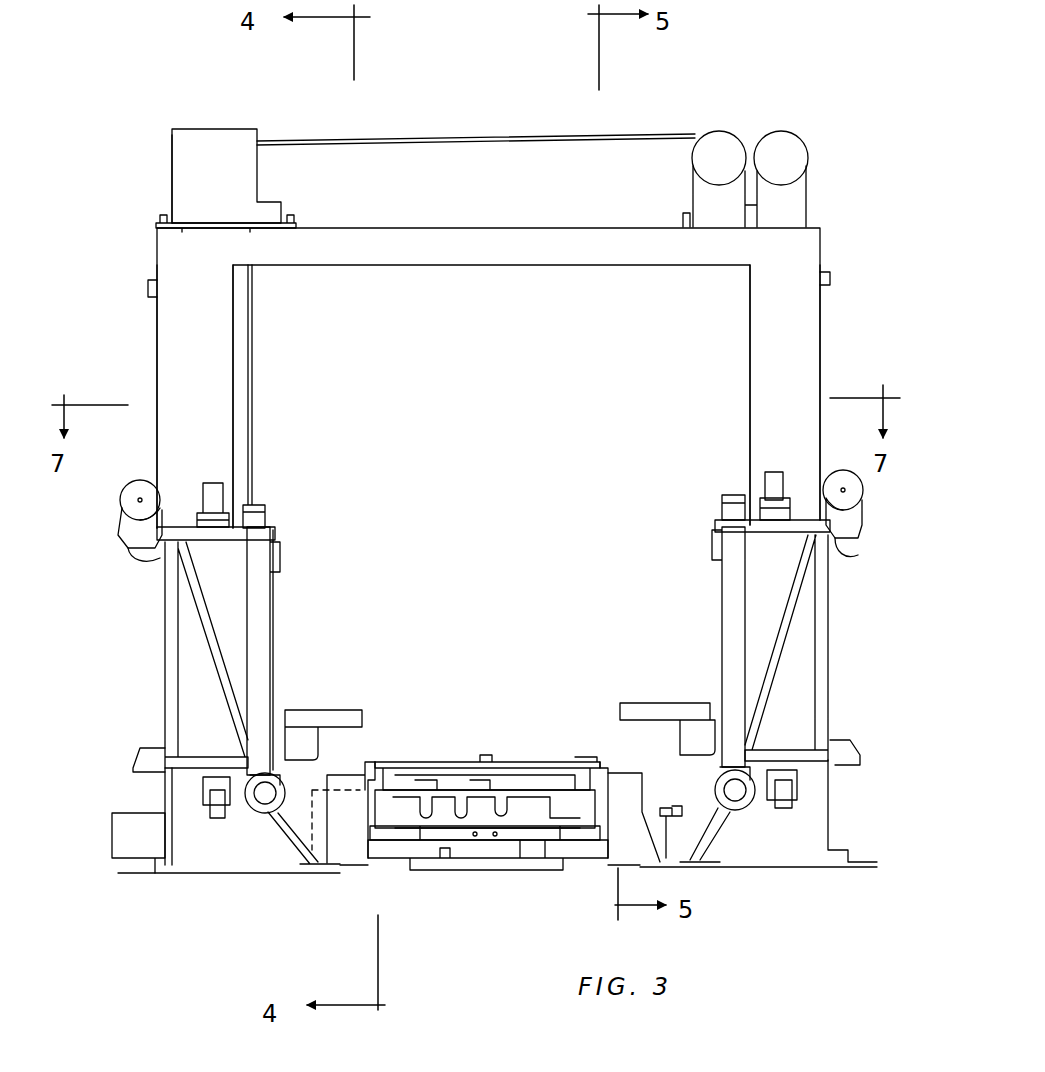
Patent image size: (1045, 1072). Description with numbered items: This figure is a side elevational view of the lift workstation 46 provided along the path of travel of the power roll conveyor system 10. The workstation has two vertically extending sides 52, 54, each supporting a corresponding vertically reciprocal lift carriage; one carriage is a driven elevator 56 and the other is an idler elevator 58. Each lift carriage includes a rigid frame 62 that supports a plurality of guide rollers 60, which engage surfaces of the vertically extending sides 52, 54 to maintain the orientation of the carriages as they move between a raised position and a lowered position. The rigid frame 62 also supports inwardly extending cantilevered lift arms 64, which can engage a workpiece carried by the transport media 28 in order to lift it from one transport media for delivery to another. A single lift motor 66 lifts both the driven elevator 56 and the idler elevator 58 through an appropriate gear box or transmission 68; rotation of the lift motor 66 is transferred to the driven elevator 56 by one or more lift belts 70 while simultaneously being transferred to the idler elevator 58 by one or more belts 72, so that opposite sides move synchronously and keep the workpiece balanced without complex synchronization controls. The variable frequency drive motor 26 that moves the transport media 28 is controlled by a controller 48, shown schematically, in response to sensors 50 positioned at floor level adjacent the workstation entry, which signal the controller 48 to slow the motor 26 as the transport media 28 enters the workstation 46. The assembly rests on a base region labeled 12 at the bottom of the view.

The power roll conveyor system 10 is at (495, 688).
The base plate 12 is at (460, 870).
The motor 26 is at (497, 832).
The transport media 28 is at (559, 762).
The lift workstation 46 is at (488, 210).
The controller 48 is at (132, 858).
The sensors 50 is at (360, 770).
The vertically extending side 52 is at (185, 325).
The vertically extending side 54 is at (804, 320).
The driven elevator 56 is at (271, 630).
The idler elevator 58 is at (721, 597).
The guide rollers 60 is at (214, 483).
The rigid frame 62 is at (165, 661).
The lift arms 64 is at (325, 710).
The lift motor 66 is at (206, 128).
The gear box or transmission 68 is at (236, 121).
The lift belts 70 is at (253, 381).
The idler lift belt 72 is at (552, 134).